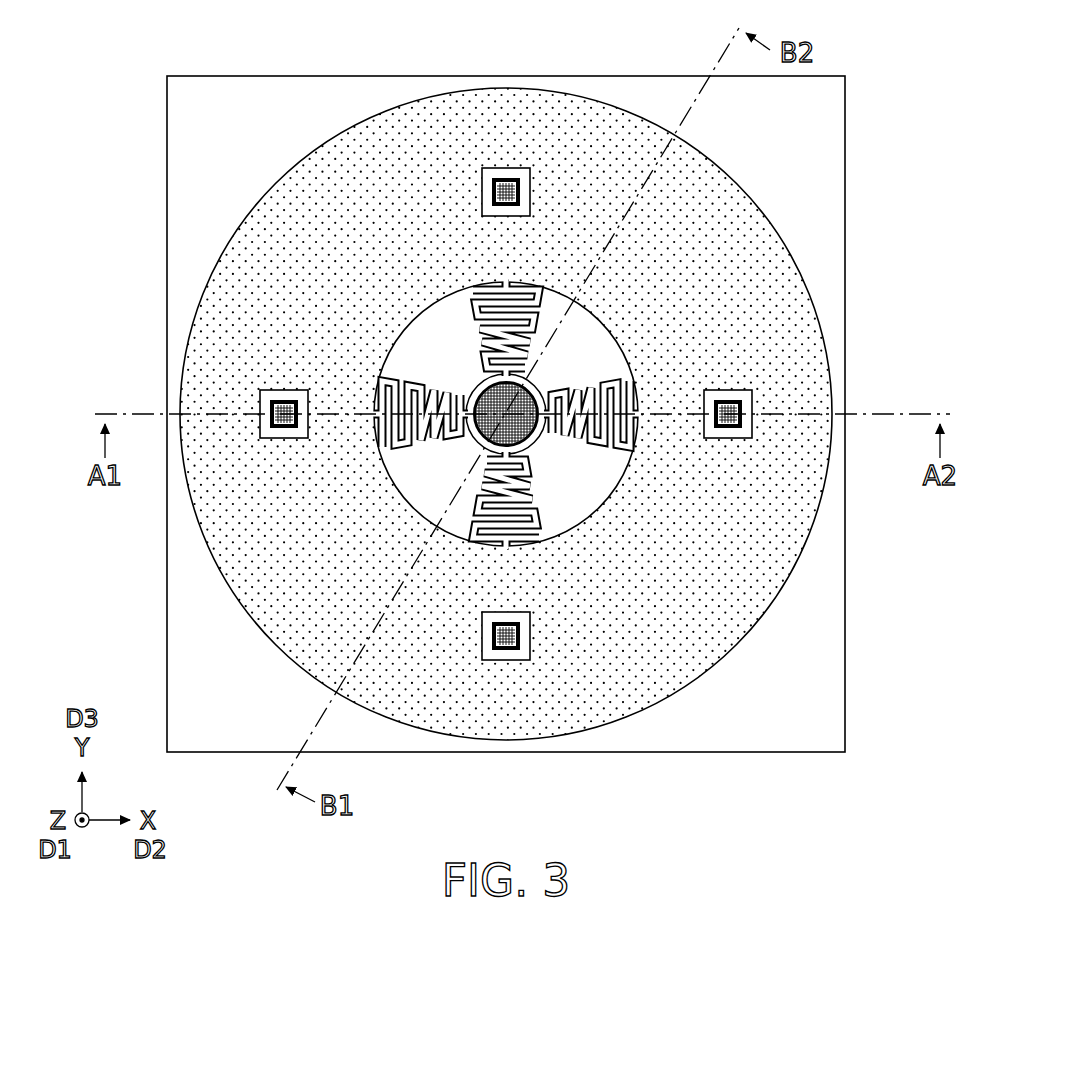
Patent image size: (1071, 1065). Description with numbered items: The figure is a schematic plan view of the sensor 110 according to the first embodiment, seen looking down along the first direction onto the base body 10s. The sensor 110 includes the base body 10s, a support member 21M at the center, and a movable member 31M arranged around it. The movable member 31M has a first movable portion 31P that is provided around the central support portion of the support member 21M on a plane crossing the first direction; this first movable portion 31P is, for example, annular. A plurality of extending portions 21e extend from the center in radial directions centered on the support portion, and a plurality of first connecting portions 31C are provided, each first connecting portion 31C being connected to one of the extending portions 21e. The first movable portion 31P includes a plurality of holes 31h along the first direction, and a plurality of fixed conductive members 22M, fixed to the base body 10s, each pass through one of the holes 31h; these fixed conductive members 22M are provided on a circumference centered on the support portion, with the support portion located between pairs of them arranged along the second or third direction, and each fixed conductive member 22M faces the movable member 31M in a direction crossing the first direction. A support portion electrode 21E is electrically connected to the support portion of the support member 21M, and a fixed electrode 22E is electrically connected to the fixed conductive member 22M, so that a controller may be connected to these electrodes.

The sensor 110 is at (558, 376).
The base body 10s is at (834, 160).
The movable member 31M is at (546, 463).
The first movable portion 31P is at (753, 358).
The first connecting portion 31C is at (509, 418).
The hole 31h is at (497, 168).
The extending portion 21e is at (497, 378).
The support member 21M is at (532, 380).
The support portion electrode 21E is at (528, 407).
The fixed electrode 22E is at (513, 180).
The fixed conductive member 22M is at (520, 192).